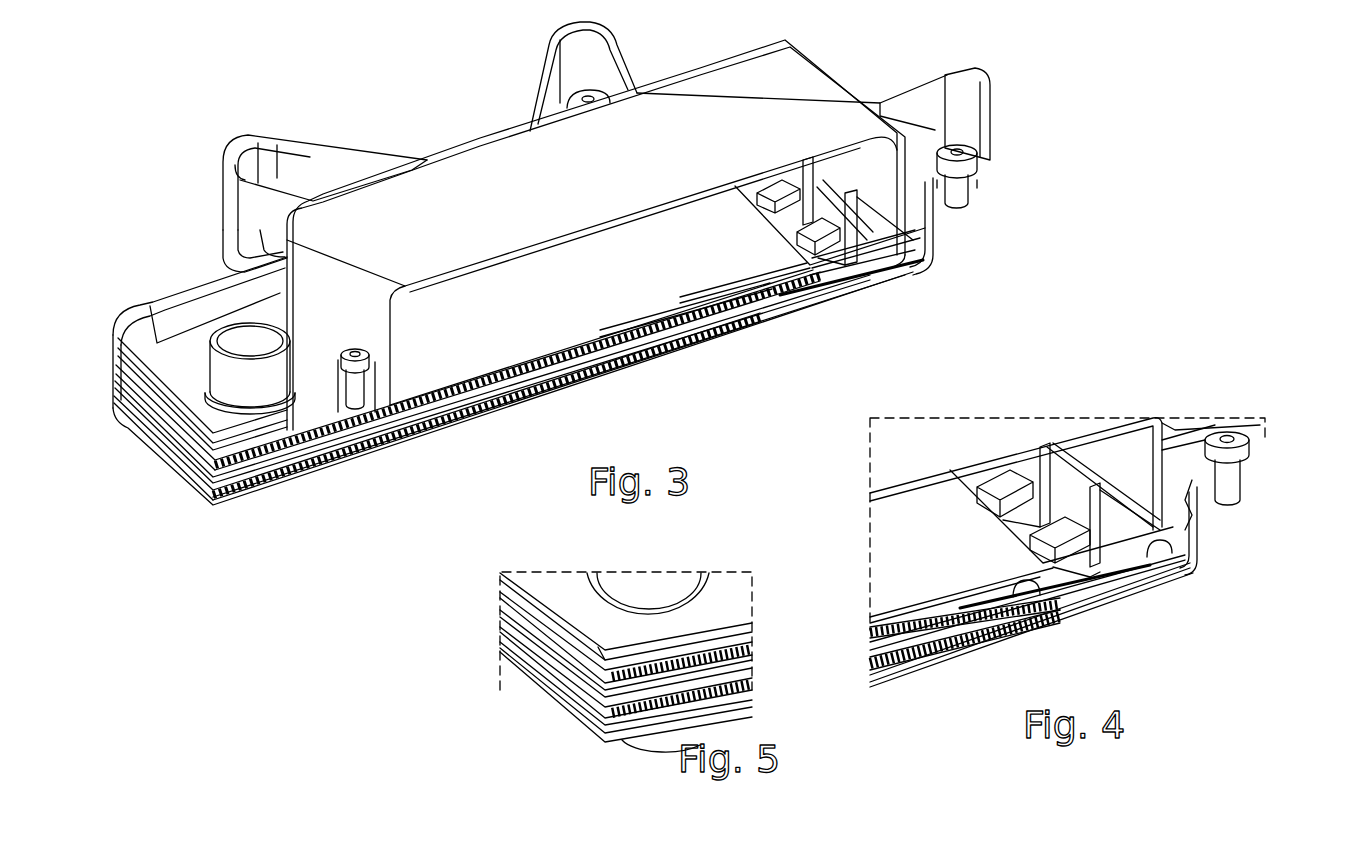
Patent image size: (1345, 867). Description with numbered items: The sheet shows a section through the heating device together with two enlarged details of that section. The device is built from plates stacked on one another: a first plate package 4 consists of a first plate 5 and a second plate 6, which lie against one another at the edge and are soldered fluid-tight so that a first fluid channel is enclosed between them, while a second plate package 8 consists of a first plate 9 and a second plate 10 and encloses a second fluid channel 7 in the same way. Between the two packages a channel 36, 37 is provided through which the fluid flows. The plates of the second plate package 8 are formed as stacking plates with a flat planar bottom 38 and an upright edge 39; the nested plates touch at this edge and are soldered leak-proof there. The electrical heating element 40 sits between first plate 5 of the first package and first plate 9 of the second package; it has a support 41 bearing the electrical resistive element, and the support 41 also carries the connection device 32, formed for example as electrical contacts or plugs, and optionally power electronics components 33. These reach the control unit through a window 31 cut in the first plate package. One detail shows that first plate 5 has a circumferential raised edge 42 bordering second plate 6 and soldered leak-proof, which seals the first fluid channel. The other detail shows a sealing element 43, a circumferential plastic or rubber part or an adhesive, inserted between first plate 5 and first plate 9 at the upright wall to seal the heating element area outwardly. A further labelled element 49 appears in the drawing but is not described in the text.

In FIG. 4, the first plate package 4 is at (913, 625).
In FIG. 3, the first plate 5 is at (572, 392).
In FIG. 4, the first plate 5 is at (1023, 625).
In FIG. 5, the first plate 5 is at (607, 657).
In FIG. 4, the second plate 6 is at (957, 605).
In FIG. 3, the second fluid channel 7 is at (350, 465).
In FIG. 3, the second plate package 8 is at (520, 418).
In FIG. 5, the first plate 9 is at (577, 677).
In FIG. 5, the second plate 10 is at (620, 727).
In FIG. 4, the window 31 is at (1053, 503).
In FIG. 3, the connection device 32 is at (880, 194).
In FIG. 3, the electronic components 33 is at (827, 220).
In FIG. 3, the channel 36 is at (775, 328).
In FIG. 3, the channel 37 is at (840, 290).
In FIG. 3, the flat planar bottom 38 is at (625, 385).
In FIG. 3, the upright edge 39 is at (942, 250).
In FIG. 3, the electrical heating element 40 is at (675, 358).
In FIG. 3, the support 41 is at (868, 272).
In FIG. 4, the circumferential raised edge 42 is at (1073, 617).
In FIG. 5, the sealing element 43 is at (500, 617).
In FIG. 3, the sealing layer 49 is at (465, 445).